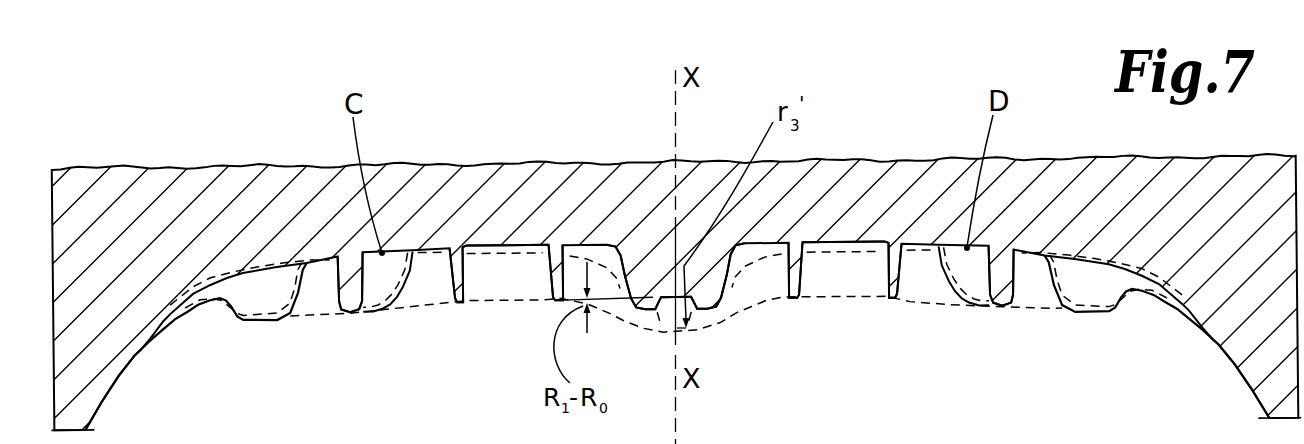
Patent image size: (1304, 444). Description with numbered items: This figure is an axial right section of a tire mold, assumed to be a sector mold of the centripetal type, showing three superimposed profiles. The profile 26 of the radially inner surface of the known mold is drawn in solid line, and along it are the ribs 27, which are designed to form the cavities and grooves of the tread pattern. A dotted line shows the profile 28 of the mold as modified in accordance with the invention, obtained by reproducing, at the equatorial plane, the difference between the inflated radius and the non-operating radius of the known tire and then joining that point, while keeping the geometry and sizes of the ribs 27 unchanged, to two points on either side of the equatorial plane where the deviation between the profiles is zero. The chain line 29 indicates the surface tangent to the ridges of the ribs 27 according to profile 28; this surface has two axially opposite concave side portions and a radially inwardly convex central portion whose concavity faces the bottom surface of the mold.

The profile of the radially inner surface of the mold 26 is at (523, 247).
The ribs 27 is at (352, 292).
The profile of the mold as modified 28 is at (840, 250).
The chain line 29 is at (740, 313).